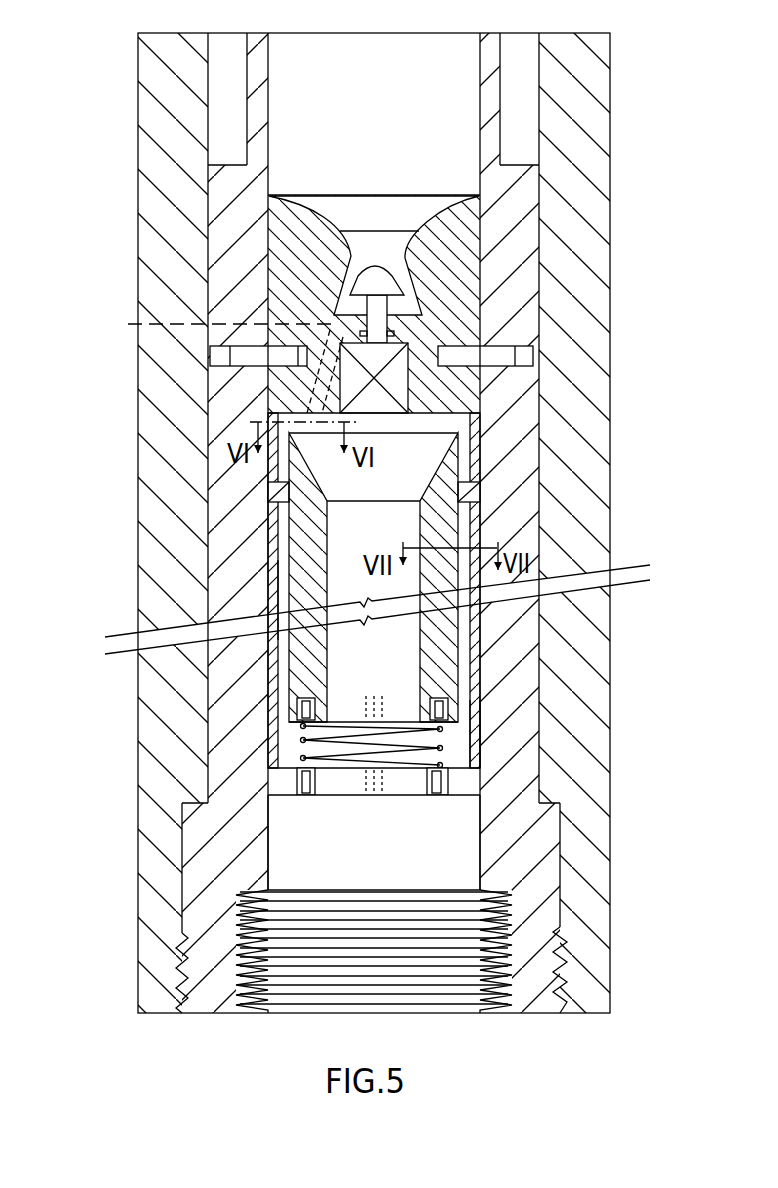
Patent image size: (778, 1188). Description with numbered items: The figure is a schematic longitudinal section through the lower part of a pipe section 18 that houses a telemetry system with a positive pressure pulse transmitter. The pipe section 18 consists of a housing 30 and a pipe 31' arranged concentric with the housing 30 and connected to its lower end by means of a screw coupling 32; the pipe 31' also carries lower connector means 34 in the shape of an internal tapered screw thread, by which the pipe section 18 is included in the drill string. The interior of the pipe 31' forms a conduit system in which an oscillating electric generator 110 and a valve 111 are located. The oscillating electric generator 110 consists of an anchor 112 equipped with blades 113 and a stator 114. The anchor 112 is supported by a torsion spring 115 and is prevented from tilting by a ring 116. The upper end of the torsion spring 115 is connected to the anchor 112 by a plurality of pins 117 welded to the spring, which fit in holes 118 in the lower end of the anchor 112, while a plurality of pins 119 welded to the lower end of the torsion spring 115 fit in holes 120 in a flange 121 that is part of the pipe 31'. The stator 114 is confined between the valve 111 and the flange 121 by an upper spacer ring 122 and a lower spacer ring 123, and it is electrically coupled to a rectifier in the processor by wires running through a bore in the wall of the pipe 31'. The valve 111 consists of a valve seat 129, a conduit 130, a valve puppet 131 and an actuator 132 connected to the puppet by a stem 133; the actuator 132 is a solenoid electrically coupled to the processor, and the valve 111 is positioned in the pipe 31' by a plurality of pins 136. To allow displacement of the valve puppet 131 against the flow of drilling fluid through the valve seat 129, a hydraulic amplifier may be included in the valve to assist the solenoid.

The housing 30 is at (157, 81).
The pipe 31' is at (371, 552).
The pipe section 18 is at (133, 231).
The valve puppet 131 is at (372, 268).
The valve seat 129 is at (400, 243).
The conduit 130 is at (213, 325).
The stem 133 is at (380, 308).
The pins 136 is at (503, 356).
The valve 111 is at (280, 385).
The actuator 132 is at (395, 382).
The upper spacer ring 122 is at (478, 443).
The ring 116 is at (482, 492).
The oscillating electric generator 110 is at (266, 520).
The blades 113 is at (313, 467).
The anchor 112 is at (300, 563).
The stator 114 is at (278, 595).
The holes 118 is at (290, 710).
The pins 117 is at (300, 730).
The torsion spring 115 is at (300, 769).
The lower spacer ring 123 is at (477, 737).
The flange 121 is at (462, 780).
The pins 119 is at (433, 800).
The holes 120 is at (462, 797).
The screw coupling 32 is at (180, 963).
The lower connector means 34 is at (255, 975).